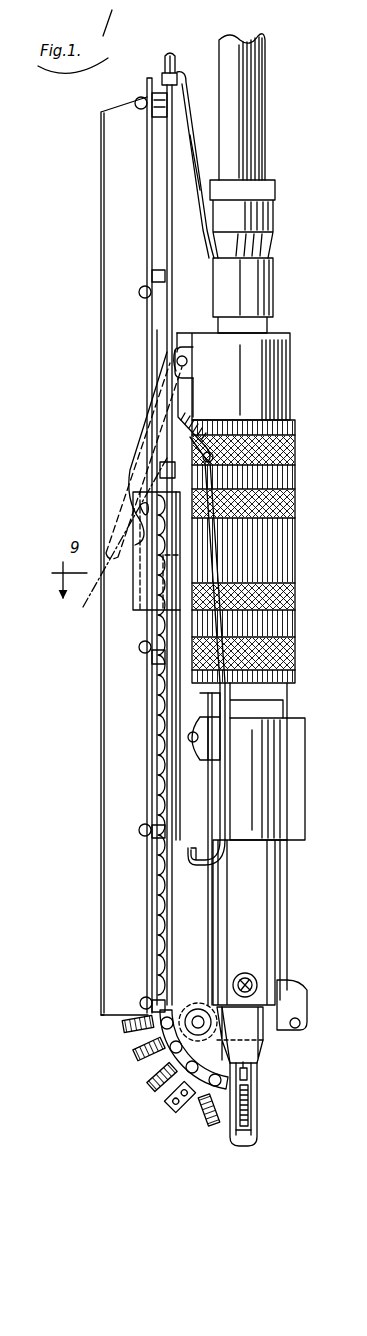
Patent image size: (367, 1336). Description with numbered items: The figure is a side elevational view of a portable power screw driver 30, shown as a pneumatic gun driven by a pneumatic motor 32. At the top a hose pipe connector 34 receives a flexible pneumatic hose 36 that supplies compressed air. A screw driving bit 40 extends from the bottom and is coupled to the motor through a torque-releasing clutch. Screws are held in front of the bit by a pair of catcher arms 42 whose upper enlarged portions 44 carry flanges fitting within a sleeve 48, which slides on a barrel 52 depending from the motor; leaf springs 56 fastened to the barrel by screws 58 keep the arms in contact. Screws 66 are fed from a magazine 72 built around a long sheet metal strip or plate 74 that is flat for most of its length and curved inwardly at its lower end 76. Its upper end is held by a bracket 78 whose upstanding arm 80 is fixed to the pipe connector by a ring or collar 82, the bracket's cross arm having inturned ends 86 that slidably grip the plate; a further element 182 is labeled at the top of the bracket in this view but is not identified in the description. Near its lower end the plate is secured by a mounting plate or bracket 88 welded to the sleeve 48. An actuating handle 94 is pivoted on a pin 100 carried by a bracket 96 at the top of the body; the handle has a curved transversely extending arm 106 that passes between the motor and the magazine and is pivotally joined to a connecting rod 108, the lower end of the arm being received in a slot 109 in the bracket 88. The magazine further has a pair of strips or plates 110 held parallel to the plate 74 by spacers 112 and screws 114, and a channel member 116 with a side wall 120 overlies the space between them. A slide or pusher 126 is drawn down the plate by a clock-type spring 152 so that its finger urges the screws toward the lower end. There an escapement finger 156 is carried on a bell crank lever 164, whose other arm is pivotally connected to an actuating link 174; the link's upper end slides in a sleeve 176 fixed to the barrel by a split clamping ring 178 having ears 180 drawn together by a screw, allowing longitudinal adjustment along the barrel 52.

The portable power screw driver 30 is at (300, 457).
The pneumatic motor 32 is at (268, 535).
The hose pipe connector 34 is at (272, 232).
The flexible pneumatic hose 36 is at (250, 157).
The screw driving bit 40 is at (256, 1075).
The catcher arms 42 is at (252, 1130).
The enlarged portions 44 is at (264, 1046).
The sleeve 48 is at (260, 891).
The barrel 52 is at (262, 790).
The leaf springs 56 is at (248, 1062).
The screws 58 is at (251, 978).
The screw 66 is at (250, 1110).
The magazine 72 is at (136, 334).
The strip or plate 74 is at (173, 250).
The curved lower end 76 is at (173, 1095).
The bracket 78 is at (200, 120).
The upstanding arm 80 is at (193, 160).
The ring or collar 82 is at (258, 280).
The inturned ends 86 is at (162, 72).
The mounting plate or bracket 88 is at (190, 917).
The actuating handle 94 is at (150, 486).
The bracket 96 is at (190, 340).
The pin 100 is at (190, 354).
The transversely extending arm 106 is at (196, 434).
The connecting rod 108 is at (222, 630).
The slot 109 is at (188, 858).
The strips or plates 110 is at (150, 137).
The spacers 112 is at (152, 100).
The screws 114 is at (139, 293).
The channel member 116 is at (100, 418).
The side wall 120 is at (118, 703).
The slide or pusher 126 is at (108, 546).
The spring 152 is at (187, 715).
The finger 156 is at (220, 1118).
The bell crank lever 164 is at (290, 1012).
The actuating link 174 is at (300, 868).
The sleeve 176 is at (298, 757).
The split clamping ring 178 is at (262, 726).
The ears 180 is at (193, 746).
The adjuster 182 is at (179, 70).